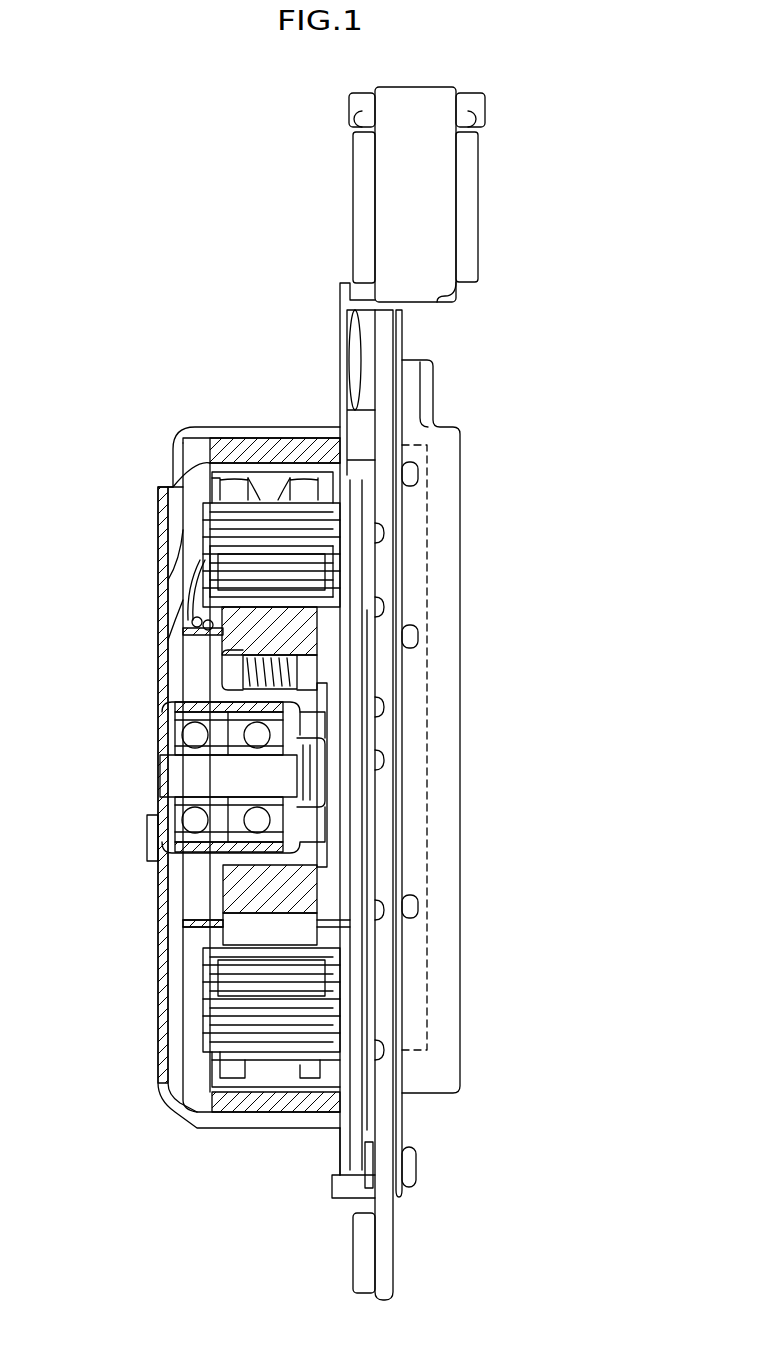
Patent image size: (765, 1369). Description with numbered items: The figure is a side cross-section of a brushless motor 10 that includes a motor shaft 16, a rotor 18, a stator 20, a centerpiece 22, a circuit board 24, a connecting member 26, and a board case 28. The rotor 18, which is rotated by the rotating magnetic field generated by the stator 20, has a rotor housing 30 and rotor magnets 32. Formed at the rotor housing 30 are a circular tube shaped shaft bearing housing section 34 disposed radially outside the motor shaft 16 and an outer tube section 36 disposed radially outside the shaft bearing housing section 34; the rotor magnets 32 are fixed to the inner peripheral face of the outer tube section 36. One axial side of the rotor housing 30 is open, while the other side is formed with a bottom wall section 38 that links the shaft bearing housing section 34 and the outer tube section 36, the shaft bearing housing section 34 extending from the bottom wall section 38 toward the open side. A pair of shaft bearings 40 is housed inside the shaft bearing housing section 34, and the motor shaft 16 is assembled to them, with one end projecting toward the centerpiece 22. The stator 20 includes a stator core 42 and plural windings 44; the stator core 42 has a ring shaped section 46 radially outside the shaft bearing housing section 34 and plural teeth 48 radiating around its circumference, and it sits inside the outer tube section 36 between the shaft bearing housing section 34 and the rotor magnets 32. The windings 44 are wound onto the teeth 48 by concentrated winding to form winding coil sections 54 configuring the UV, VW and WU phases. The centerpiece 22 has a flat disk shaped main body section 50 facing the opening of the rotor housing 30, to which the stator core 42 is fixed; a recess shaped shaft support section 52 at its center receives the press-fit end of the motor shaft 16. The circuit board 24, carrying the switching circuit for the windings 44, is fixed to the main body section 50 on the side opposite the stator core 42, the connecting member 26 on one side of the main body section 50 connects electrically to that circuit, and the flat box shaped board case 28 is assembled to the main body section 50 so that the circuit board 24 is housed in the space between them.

The brushless motor 10 is at (117, 257).
The motor shaft 16 is at (175, 780).
The rotor 18 is at (245, 424).
The stator 20 is at (205, 491).
The centerpiece 22 is at (405, 733).
The circuit board 24 is at (428, 652).
The connecting member 26 is at (481, 200).
The board case 28 is at (462, 573).
The rotor housing 30 is at (300, 427).
The rotor magnets 32 is at (195, 430).
The shaft bearing housing section 34 is at (200, 695).
The outer tube section 36 is at (220, 427).
The bottom wall section 38 is at (178, 578).
The shaft bearings 40 is at (188, 737).
The stator core 42 is at (268, 440).
The windings 44 is at (200, 522).
The ring shaped section 46 is at (230, 662).
The teeth 48 is at (195, 548).
The main body section 50 is at (405, 822).
The shaft support section 52 is at (320, 775).
The winding coil sections 54 is at (195, 493).